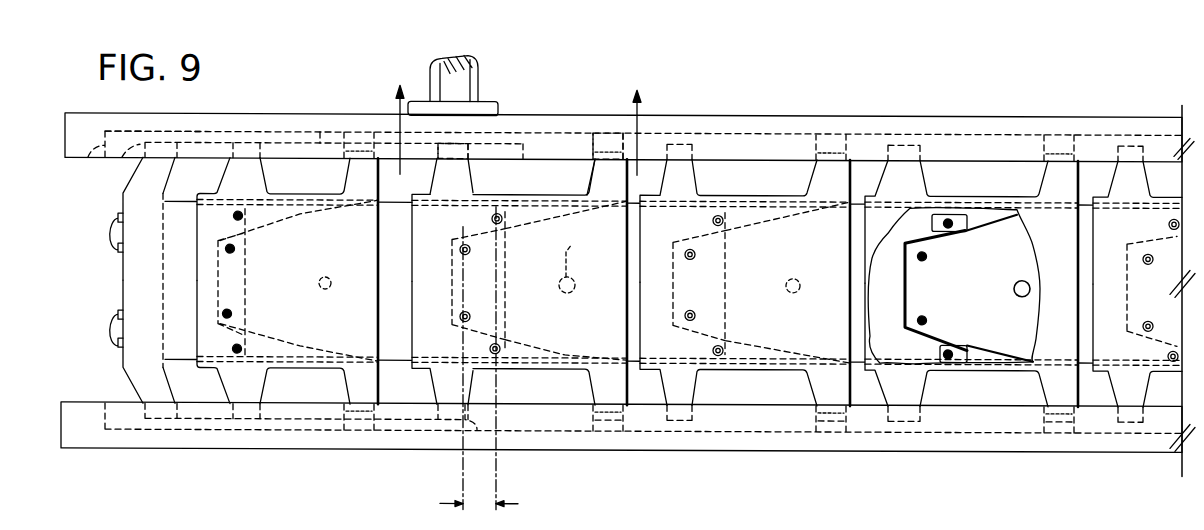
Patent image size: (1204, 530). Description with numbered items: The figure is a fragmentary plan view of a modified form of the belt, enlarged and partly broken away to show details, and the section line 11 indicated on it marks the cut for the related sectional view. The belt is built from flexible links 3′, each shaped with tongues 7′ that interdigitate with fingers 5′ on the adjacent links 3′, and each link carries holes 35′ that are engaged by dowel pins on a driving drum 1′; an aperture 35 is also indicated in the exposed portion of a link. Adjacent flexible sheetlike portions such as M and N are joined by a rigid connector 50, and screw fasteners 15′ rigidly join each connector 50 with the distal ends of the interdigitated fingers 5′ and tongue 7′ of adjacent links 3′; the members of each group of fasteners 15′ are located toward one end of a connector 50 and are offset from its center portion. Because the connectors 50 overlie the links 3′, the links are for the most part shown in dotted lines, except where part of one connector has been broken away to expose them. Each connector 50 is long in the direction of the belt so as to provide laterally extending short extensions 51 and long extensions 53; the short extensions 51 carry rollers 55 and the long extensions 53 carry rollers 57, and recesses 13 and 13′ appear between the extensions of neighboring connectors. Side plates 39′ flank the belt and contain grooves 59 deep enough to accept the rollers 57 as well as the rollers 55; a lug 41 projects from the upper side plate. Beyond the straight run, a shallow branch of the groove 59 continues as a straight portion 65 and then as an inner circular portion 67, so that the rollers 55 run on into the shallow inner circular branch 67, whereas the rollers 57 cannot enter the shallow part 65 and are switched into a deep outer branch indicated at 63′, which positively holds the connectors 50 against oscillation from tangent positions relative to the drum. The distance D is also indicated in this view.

The driving drum 1′ is at (390, 198).
The flexible link 3′ is at (566, 280).
The finger 5′ is at (534, 177).
The tongue 7′ is at (468, 283).
The section line 11 is at (521, 120).
The fastener 13 is at (745, 370).
The recess 13′ is at (534, 387).
The screw fastener 15′ is at (497, 223).
The aperture 35 is at (1016, 279).
The hole 35′ is at (579, 262).
The side plate 39′ is at (1017, 104).
The retaining lug 41 is at (481, 74).
The connector 50 is at (330, 308).
The short extension 51 is at (451, 176).
The long extension 53 is at (607, 178).
The roller 55 is at (268, 140).
The roller 57 is at (180, 140).
The groove 59 is at (320, 130).
The flange 63′ is at (103, 140).
The straight portion 65 is at (513, 140).
The inner circular portion 67 is at (110, 222).
The distance D is at (479, 503).
The flexible sheetlike portion M is at (954, 285).
The flexible sheetlike portion N is at (969, 288).